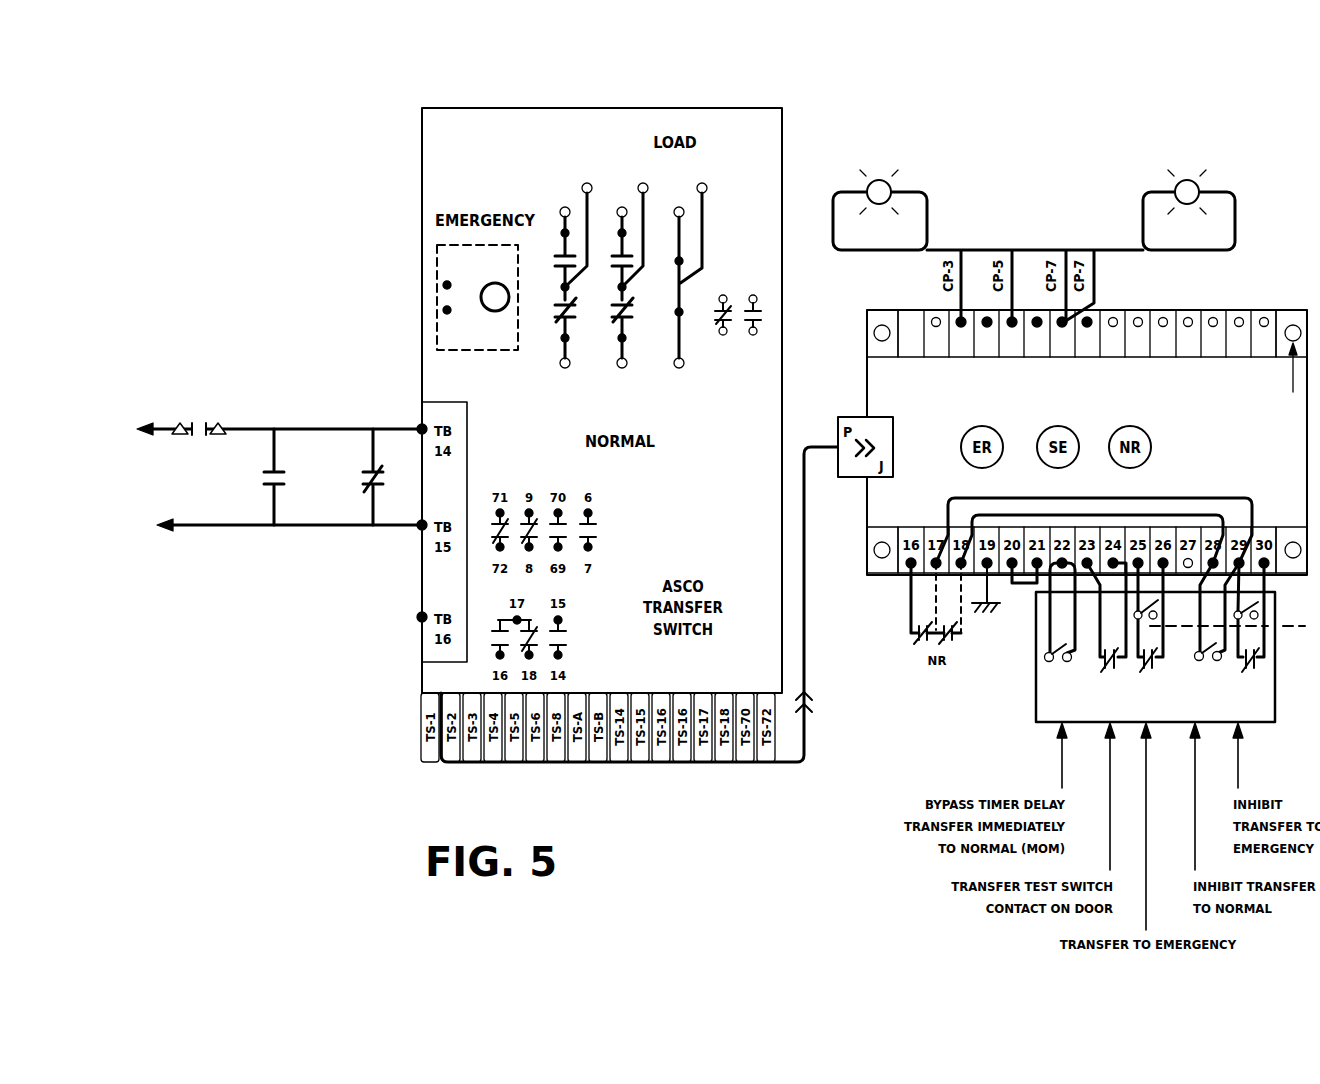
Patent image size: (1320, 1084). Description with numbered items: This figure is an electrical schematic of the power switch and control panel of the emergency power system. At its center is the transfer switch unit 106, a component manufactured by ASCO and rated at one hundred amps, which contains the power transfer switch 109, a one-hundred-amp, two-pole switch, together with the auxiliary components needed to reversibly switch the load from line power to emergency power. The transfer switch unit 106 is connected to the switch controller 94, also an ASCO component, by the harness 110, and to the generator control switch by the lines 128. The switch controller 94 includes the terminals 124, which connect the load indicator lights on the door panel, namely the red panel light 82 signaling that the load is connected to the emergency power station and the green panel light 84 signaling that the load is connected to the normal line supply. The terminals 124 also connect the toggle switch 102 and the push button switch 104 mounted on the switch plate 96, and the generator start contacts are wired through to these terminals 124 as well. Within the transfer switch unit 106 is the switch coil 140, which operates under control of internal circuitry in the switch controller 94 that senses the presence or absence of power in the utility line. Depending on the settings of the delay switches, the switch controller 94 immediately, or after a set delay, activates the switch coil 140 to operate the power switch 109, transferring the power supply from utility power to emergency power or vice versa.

The red panel light 82 is at (895, 190).
The green panel light 84 is at (1203, 190).
The switch controller 94 is at (932, 310).
The switch plate 96 is at (1276, 610).
The toggle switch 102 is at (1264, 645).
The push button switch 104 is at (1137, 659).
The transfer switch unit 106 is at (785, 310).
The power transfer switch 109 is at (719, 258).
The wire harness 110 is at (808, 672).
The terminals 124 is at (1150, 310).
The lines 128 is at (323, 427).
The switch coil 140 is at (440, 352).